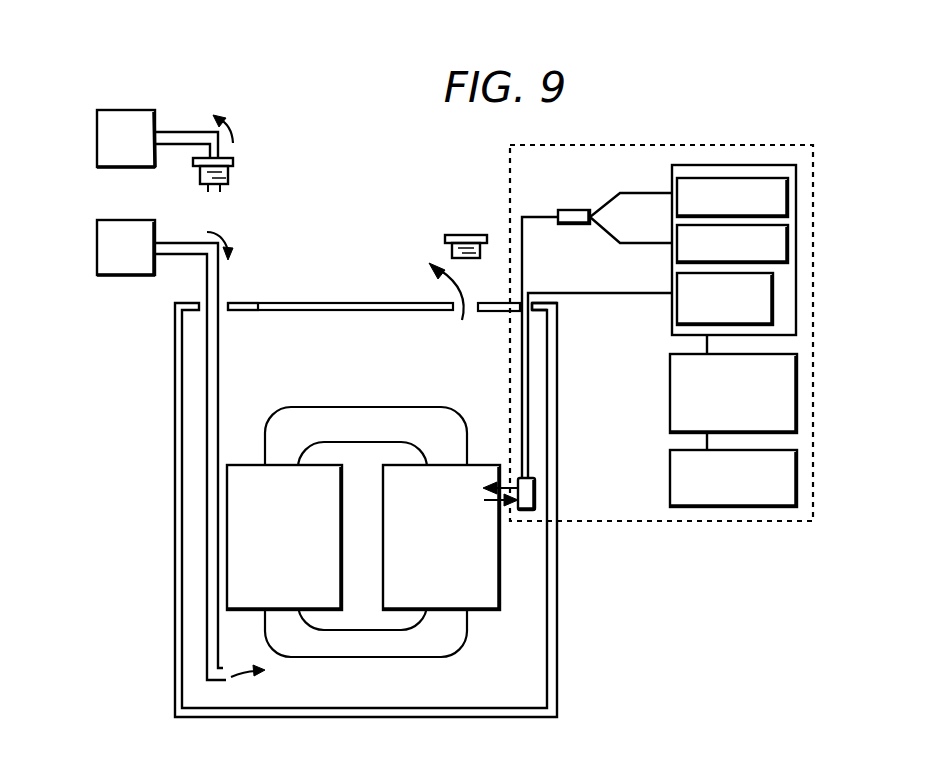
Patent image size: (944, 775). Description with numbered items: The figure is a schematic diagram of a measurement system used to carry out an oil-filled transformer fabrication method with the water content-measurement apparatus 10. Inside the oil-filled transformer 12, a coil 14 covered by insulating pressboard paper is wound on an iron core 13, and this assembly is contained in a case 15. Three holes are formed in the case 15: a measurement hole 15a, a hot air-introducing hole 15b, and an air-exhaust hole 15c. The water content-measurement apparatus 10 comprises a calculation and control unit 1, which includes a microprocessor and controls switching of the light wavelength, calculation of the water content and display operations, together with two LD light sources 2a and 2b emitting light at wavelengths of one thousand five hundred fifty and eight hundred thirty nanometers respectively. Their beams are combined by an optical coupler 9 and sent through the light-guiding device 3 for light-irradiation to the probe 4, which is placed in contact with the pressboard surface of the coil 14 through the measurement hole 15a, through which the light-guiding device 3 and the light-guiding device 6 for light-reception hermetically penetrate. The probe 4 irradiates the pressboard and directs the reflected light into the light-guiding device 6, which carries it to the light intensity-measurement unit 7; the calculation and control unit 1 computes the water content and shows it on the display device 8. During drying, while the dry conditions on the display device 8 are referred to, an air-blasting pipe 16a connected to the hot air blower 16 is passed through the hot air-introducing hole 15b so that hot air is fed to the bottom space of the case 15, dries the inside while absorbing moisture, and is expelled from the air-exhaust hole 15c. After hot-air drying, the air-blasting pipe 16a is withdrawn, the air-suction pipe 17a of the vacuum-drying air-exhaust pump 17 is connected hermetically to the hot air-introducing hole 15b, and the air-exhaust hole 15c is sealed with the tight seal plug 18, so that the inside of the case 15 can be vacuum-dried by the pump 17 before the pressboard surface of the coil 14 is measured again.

The calculation and control unit 1 is at (733, 393).
The light source 2a is at (732, 197).
The light source 2b is at (732, 244).
The light-guiding device for light-irradiation 3 is at (522, 245).
The probe 4 is at (530, 494).
The light-guiding device for light-reception 6 is at (607, 293).
The light intensity-measurement unit 7 is at (725, 299).
The display device 8 is at (733, 478).
The optical coupler 9 is at (572, 208).
The water content-measurement apparatus 10 is at (758, 522).
The oil-filled transformer 12 is at (557, 653).
The iron core 13 is at (297, 427).
The coil 14 is at (327, 590).
The case 15 is at (375, 300).
The measurement hole 15a is at (533, 323).
The hot air-introducing hole 15b is at (222, 310).
The air-exhaust hole 15c is at (474, 307).
The hot air blower 16 is at (126, 247).
The air-blasting pipe 16a is at (207, 380).
The vacuum-drying air-exhaust pump 17 is at (126, 138).
The air-suction pipe 17a is at (220, 148).
The tight seal plug 18 is at (468, 230).